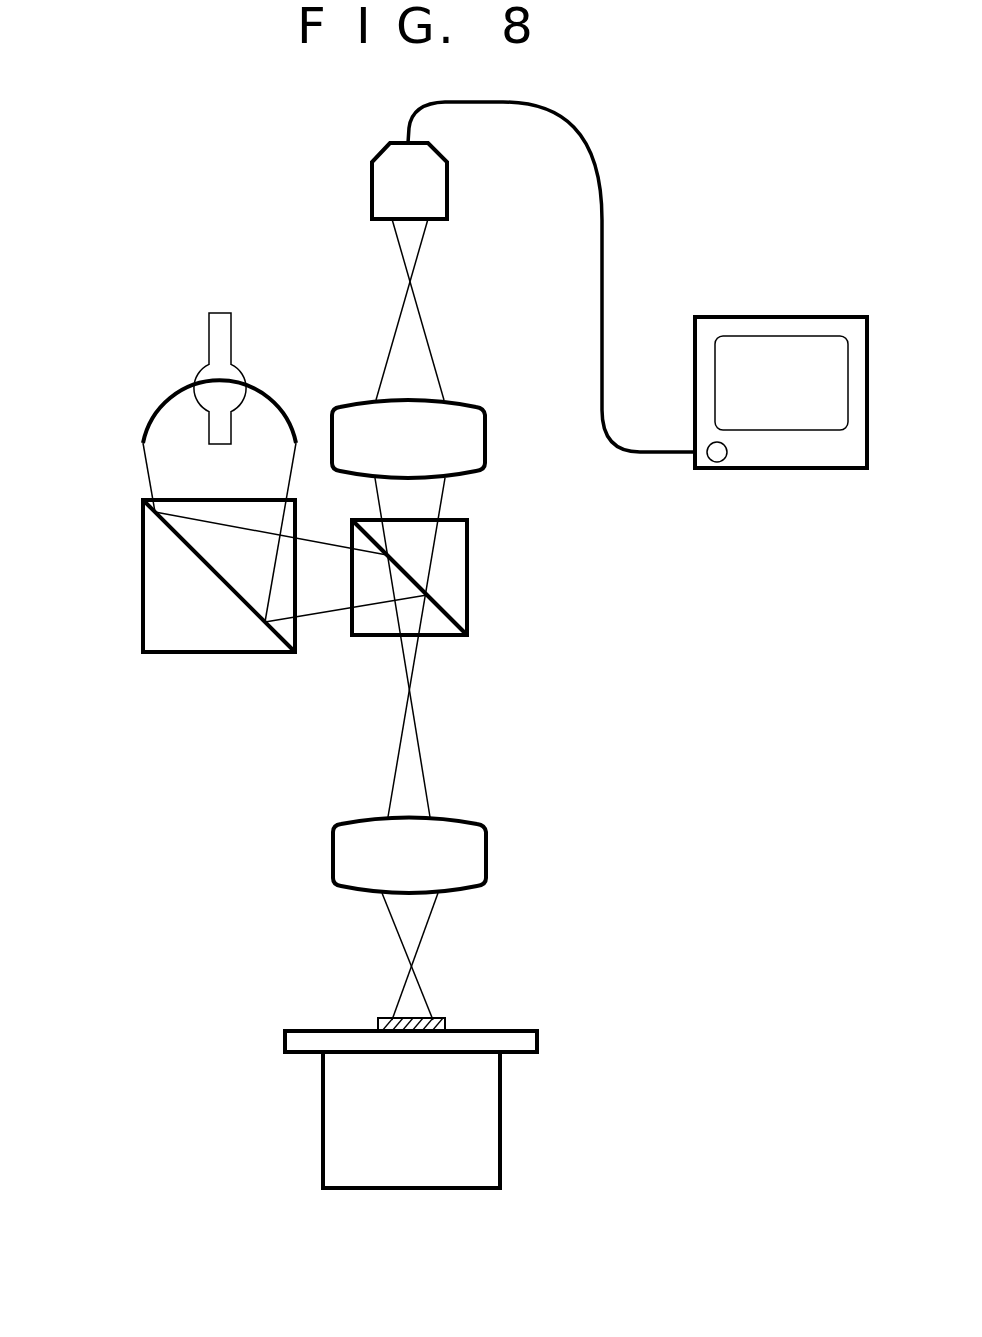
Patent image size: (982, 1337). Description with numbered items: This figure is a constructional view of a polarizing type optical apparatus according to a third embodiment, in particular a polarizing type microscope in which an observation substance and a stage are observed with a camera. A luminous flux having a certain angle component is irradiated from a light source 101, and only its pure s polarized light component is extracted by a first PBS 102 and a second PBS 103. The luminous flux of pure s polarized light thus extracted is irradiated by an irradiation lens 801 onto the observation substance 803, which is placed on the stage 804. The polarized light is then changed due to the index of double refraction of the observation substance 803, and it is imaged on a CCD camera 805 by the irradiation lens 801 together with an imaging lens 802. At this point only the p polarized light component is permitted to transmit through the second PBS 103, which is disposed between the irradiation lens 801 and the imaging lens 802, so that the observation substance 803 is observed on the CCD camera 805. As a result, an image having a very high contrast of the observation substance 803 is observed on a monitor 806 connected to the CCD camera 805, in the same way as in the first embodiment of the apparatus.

The light source 101 is at (151, 405).
The first PBS 102 is at (143, 610).
The second PBS 103 is at (467, 627).
The irradiation lens 801 is at (486, 865).
The imaging lens 802 is at (485, 468).
The observation substance 803 is at (447, 1023).
The stage 804 is at (500, 1120).
The CCD camera 805 is at (372, 177).
The monitor 806 is at (783, 468).